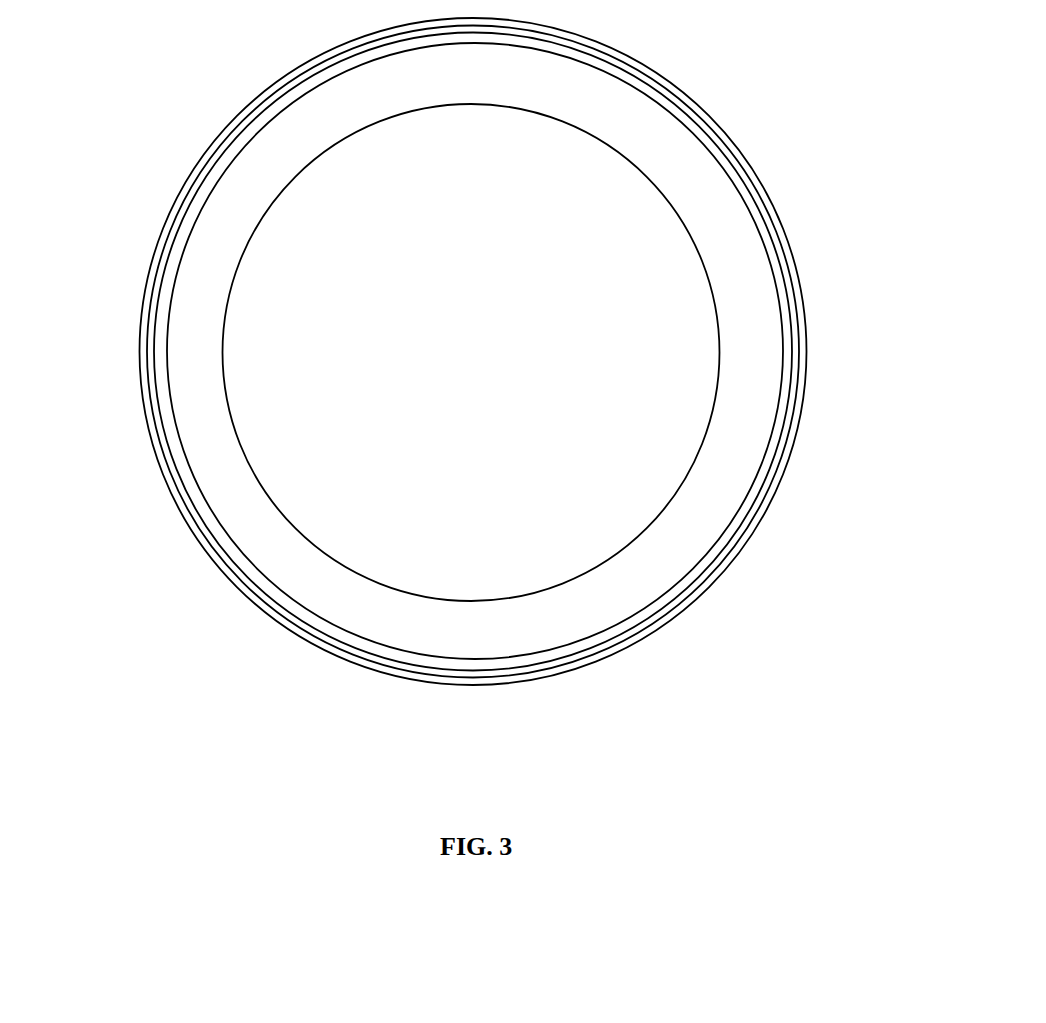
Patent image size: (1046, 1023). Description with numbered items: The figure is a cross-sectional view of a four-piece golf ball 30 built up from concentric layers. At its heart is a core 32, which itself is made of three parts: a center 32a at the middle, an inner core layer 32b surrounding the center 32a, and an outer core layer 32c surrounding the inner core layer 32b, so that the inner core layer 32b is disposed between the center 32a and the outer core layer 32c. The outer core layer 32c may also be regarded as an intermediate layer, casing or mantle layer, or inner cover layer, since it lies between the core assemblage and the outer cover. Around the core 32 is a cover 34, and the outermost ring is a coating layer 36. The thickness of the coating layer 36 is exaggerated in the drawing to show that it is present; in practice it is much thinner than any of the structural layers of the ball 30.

The four-piece golf ball 30 is at (157, 148).
The core 32 is at (555, 352).
The center 32a is at (724, 412).
The inner core layer 32b is at (780, 402).
The outer core layer 32c is at (780, 448).
The cover 34 is at (702, 587).
The coating layer 36 is at (603, 663).